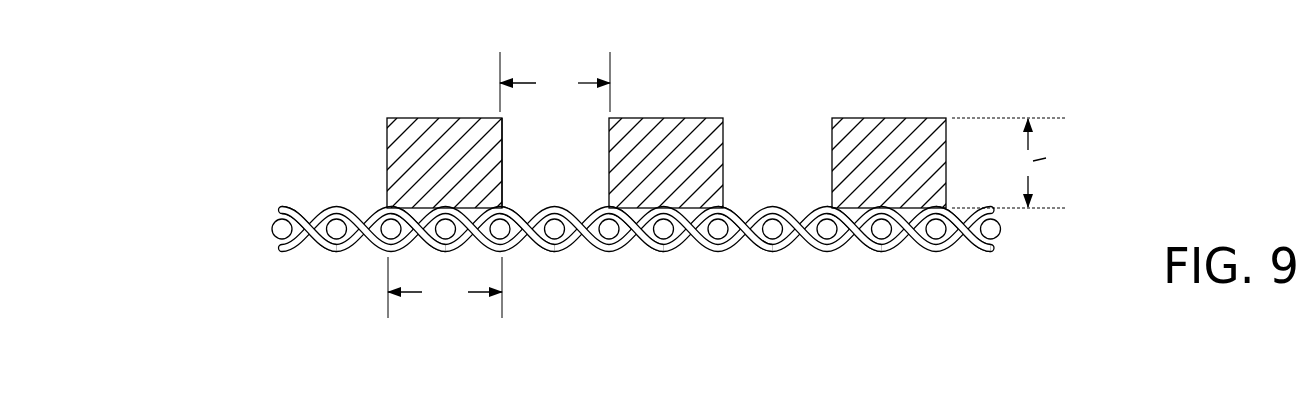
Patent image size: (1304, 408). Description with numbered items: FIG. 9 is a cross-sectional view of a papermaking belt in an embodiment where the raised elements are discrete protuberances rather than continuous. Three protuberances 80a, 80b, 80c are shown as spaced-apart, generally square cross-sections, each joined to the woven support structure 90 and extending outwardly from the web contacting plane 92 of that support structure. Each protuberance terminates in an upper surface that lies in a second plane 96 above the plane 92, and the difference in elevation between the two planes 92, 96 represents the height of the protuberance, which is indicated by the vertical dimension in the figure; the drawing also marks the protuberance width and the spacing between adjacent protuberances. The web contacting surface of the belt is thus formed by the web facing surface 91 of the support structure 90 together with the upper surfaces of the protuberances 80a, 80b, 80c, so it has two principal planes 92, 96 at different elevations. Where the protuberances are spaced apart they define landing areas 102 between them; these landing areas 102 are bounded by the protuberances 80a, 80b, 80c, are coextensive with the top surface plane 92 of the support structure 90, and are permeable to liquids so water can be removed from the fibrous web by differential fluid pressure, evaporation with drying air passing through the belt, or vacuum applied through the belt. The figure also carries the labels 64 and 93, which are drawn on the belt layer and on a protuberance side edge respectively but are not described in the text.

The woven fabric layer 64 is at (755, 94).
The protuberance 80a is at (915, 118).
The protuberance 80b is at (647, 118).
The protuberance 80c is at (407, 118).
The support structure 90 is at (280, 202).
The web facing surface 91 is at (375, 157).
The web contacting plane 92 is at (383, 112).
The side edge of elongated member 93 is at (503, 128).
The second plane 96 is at (1012, 116).
The landing areas 102 is at (795, 138).